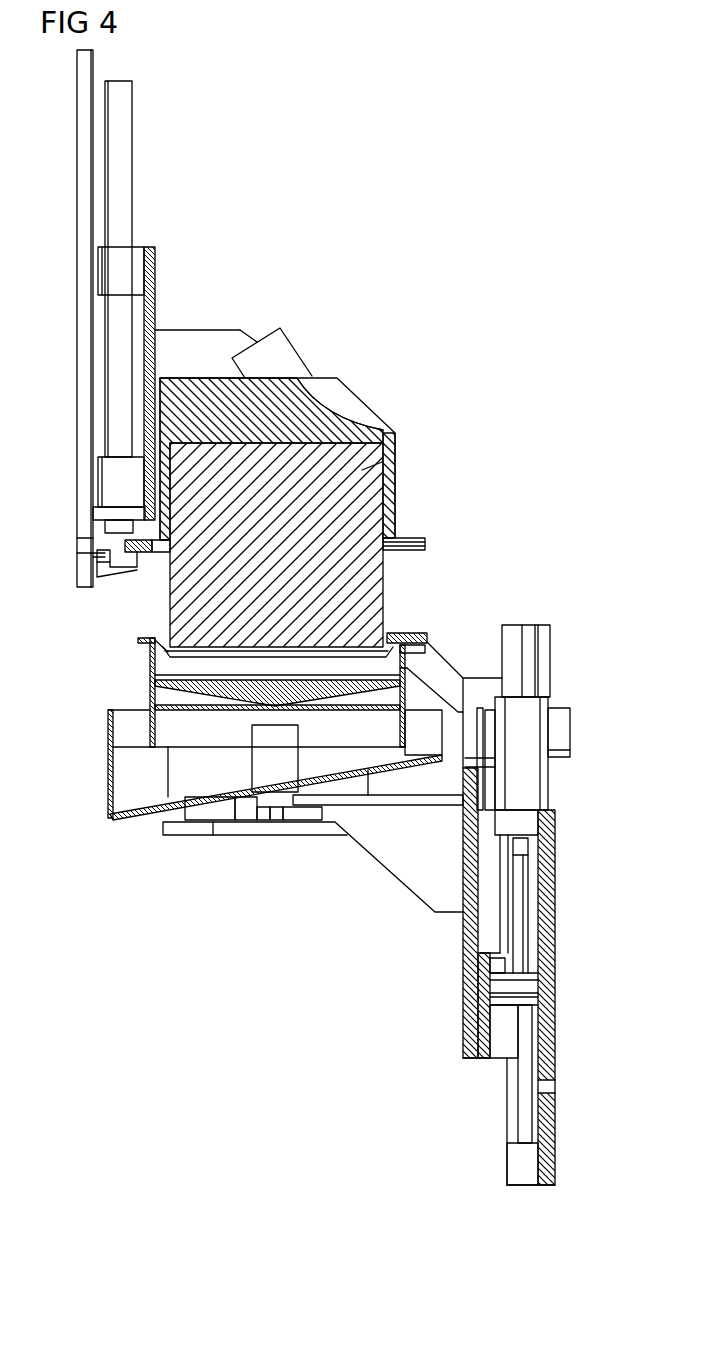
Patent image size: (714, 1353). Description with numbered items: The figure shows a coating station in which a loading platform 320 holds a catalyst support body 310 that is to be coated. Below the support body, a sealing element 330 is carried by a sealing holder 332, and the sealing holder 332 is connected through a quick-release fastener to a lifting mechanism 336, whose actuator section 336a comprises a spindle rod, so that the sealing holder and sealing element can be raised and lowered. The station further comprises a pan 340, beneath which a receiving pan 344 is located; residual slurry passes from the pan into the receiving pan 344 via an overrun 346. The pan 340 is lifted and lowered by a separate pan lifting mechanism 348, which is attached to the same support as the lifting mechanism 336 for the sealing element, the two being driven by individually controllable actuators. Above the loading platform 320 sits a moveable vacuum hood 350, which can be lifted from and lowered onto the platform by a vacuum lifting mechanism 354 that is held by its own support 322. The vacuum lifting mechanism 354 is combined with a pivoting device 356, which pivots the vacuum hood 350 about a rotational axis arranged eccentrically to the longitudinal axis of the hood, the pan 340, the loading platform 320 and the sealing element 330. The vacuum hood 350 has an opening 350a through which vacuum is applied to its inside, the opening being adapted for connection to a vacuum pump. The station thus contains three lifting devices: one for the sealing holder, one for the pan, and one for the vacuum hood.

The catalyst support body 310 is at (396, 453).
The loading platform 320 is at (413, 538).
The support 322 is at (125, 567).
The sealing element 330 is at (399, 633).
The sealing holder 332 is at (423, 633).
The lifting mechanism 336 is at (451, 661).
The actuator section 336a is at (550, 790).
The pan 340 is at (148, 655).
The receiving pan 344 is at (108, 760).
The overrun 346 is at (128, 717).
The pan lifting mechanism 348 is at (398, 878).
The vacuum hood 350 is at (350, 380).
The opening 350a is at (276, 340).
The vacuum lifting mechanism 354 is at (152, 247).
The pivoting device 356 is at (114, 100).